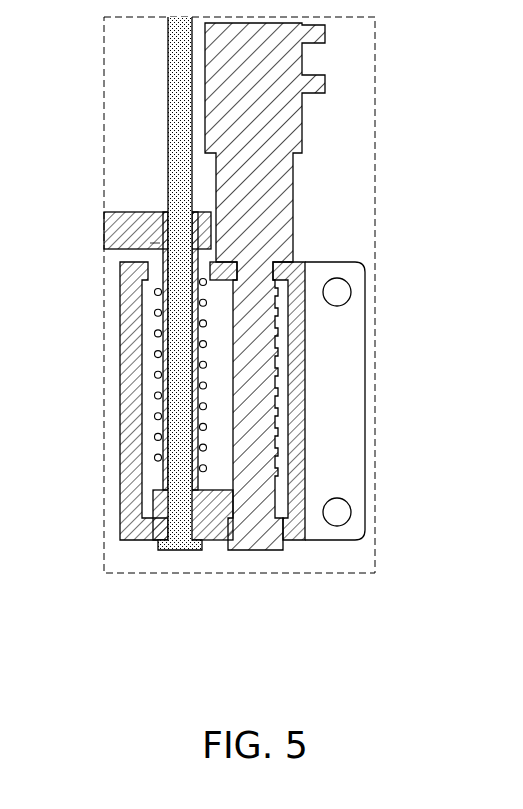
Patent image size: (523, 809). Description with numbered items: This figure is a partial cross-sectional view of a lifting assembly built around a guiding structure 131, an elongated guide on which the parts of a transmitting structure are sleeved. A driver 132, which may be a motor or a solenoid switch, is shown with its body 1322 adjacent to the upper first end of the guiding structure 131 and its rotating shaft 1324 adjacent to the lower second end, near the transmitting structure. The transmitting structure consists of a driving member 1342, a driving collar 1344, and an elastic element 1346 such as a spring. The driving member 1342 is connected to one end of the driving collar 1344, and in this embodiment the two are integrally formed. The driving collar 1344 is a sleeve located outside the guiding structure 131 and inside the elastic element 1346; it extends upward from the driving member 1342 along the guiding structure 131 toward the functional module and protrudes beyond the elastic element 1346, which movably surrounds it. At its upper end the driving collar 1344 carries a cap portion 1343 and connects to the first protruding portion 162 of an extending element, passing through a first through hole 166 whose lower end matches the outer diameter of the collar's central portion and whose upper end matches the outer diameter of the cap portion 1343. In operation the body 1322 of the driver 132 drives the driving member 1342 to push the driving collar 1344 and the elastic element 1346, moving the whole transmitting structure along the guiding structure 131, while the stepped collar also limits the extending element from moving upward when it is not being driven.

The guiding structure 131 is at (178, 116).
The driver 132 is at (438, 188).
The body 1322 is at (265, 207).
The rotating shaft 1324 is at (265, 386).
The first protruding portion 162 is at (108, 228).
The first through hole 166 is at (151, 246).
The driving member 1342 is at (218, 510).
The cap portion 1343 is at (168, 214).
The driving collar 1344 is at (155, 478).
The elastic element 1346 is at (160, 420).